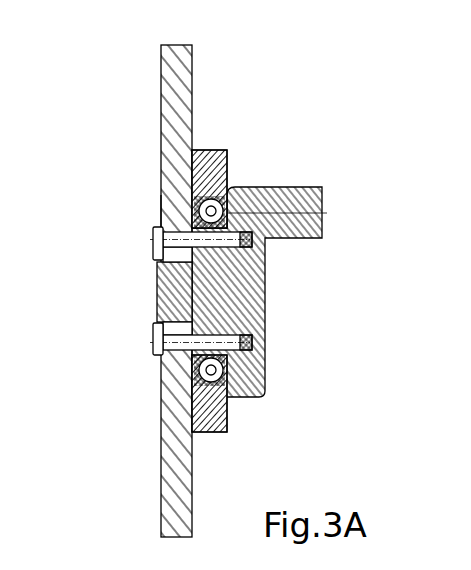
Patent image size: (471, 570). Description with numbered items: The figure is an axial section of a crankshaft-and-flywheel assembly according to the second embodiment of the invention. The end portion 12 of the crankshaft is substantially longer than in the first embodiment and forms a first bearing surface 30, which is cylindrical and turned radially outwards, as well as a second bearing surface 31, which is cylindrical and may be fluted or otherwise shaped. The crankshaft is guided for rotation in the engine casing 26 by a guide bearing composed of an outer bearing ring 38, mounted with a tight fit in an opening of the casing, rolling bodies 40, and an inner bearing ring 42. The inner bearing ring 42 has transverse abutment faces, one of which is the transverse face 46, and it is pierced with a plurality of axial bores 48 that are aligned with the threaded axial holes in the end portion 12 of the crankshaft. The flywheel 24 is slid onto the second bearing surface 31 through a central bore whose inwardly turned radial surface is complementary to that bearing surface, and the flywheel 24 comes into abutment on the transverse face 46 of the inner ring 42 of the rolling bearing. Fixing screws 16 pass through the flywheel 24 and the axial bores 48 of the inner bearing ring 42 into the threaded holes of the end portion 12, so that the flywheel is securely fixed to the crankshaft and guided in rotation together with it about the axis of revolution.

The end portion 12 is at (157, 287).
The fixing screws 16 is at (153, 235).
The flywheel 24 is at (172, 76).
The engine casing 26 is at (227, 152).
The first bearing surface 30 is at (161, 201).
The second bearing surface 31 is at (153, 323).
The outer bearing ring 38 is at (230, 186).
The rolling bodies 40 is at (227, 397).
The inner bearing ring 42 is at (236, 360).
The transverse abutment face 46 is at (163, 357).
The axial bores 48 is at (153, 342).